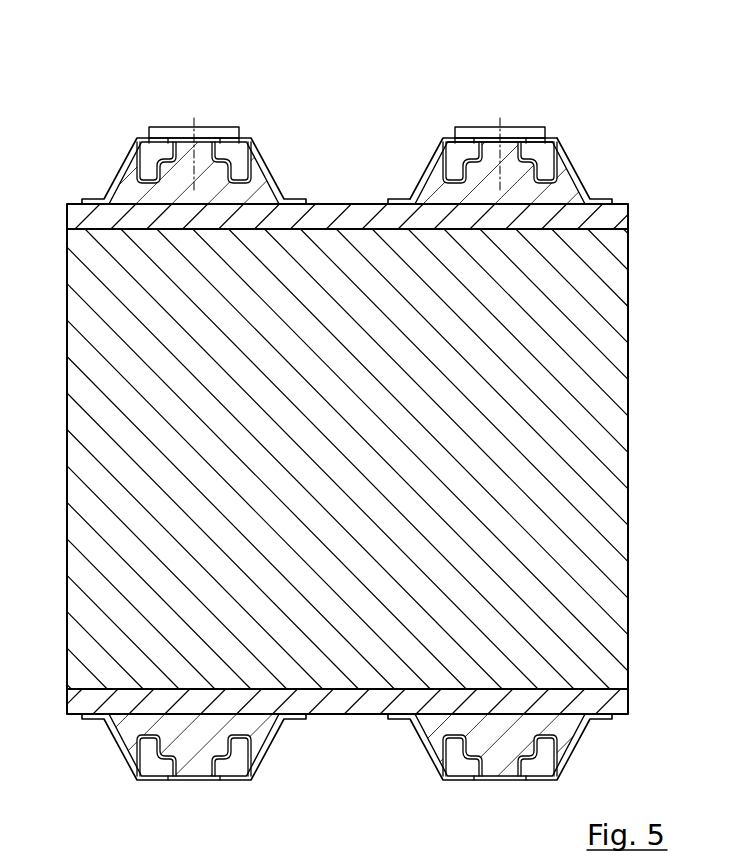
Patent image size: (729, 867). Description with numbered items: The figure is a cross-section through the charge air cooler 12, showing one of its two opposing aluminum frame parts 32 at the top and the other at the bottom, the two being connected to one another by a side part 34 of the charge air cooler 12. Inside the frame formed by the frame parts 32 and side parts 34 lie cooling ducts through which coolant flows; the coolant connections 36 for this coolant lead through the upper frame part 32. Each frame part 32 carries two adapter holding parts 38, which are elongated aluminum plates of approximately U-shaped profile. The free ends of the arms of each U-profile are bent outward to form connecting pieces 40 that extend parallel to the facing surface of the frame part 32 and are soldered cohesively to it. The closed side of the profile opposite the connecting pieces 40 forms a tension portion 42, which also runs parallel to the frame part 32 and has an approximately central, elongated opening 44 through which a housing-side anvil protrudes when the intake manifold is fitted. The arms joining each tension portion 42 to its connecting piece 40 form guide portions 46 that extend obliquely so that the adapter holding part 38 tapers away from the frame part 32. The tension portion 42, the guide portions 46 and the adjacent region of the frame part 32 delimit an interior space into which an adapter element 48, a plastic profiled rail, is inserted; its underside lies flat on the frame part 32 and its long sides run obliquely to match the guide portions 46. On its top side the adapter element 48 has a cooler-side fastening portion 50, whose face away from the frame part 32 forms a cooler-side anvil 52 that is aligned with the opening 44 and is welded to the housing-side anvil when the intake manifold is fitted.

The charge air cooler 12 is at (672, 122).
The frame part 32 is at (610, 217).
The side part 34 is at (628, 588).
The coolant connection 36 is at (157, 155).
The adapter holding part 38 is at (588, 183).
The connecting piece 40 is at (402, 198).
The tension portion 42 is at (540, 140).
The opening 44 is at (490, 140).
The guide portion 46 is at (574, 167).
The adapter element 48 is at (210, 172).
The cooler-side fastening portion 50 is at (185, 162).
The cooler-side anvil 52 is at (205, 150).